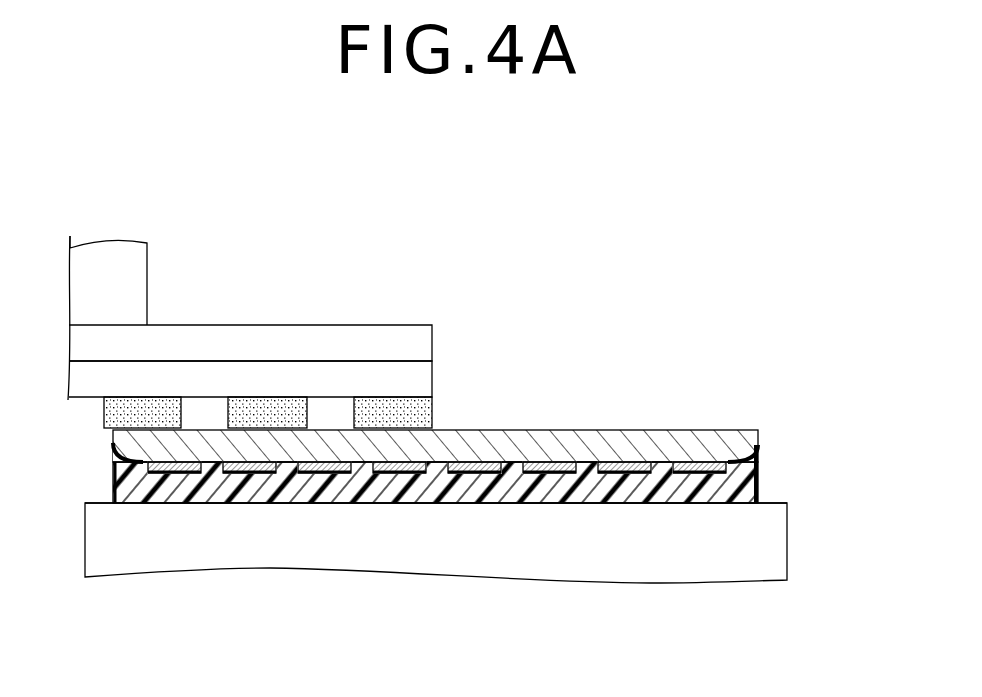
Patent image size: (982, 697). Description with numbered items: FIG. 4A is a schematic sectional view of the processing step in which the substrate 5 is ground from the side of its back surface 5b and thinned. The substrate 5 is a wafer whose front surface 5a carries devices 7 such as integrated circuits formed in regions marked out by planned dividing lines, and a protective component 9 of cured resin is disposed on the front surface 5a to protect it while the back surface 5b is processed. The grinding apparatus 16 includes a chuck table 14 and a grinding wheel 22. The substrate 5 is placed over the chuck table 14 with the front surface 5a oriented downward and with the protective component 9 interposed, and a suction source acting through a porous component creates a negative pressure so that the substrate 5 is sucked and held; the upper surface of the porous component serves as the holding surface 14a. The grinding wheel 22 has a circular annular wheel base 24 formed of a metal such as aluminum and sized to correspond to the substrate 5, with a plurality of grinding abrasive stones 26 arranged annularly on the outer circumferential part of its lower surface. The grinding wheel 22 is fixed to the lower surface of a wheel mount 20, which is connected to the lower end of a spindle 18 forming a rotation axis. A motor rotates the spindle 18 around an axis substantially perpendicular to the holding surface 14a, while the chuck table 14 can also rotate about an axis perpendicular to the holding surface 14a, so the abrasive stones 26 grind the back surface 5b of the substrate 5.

The substrate 5 is at (726, 411).
The front surface 5a is at (600, 500).
The back surface 5b is at (652, 430).
The devices 7 is at (318, 474).
The protective component 9 is at (765, 457).
The chuck table 14 is at (478, 573).
The holding surface 14a is at (770, 503).
The grinding apparatus 16 is at (293, 251).
The spindle 18 is at (132, 302).
The wheel mount 20 is at (385, 333).
The grinding wheel 22 is at (328, 367).
The wheel base 24 is at (425, 368).
The grinding abrasive stones 26 is at (321, 406).